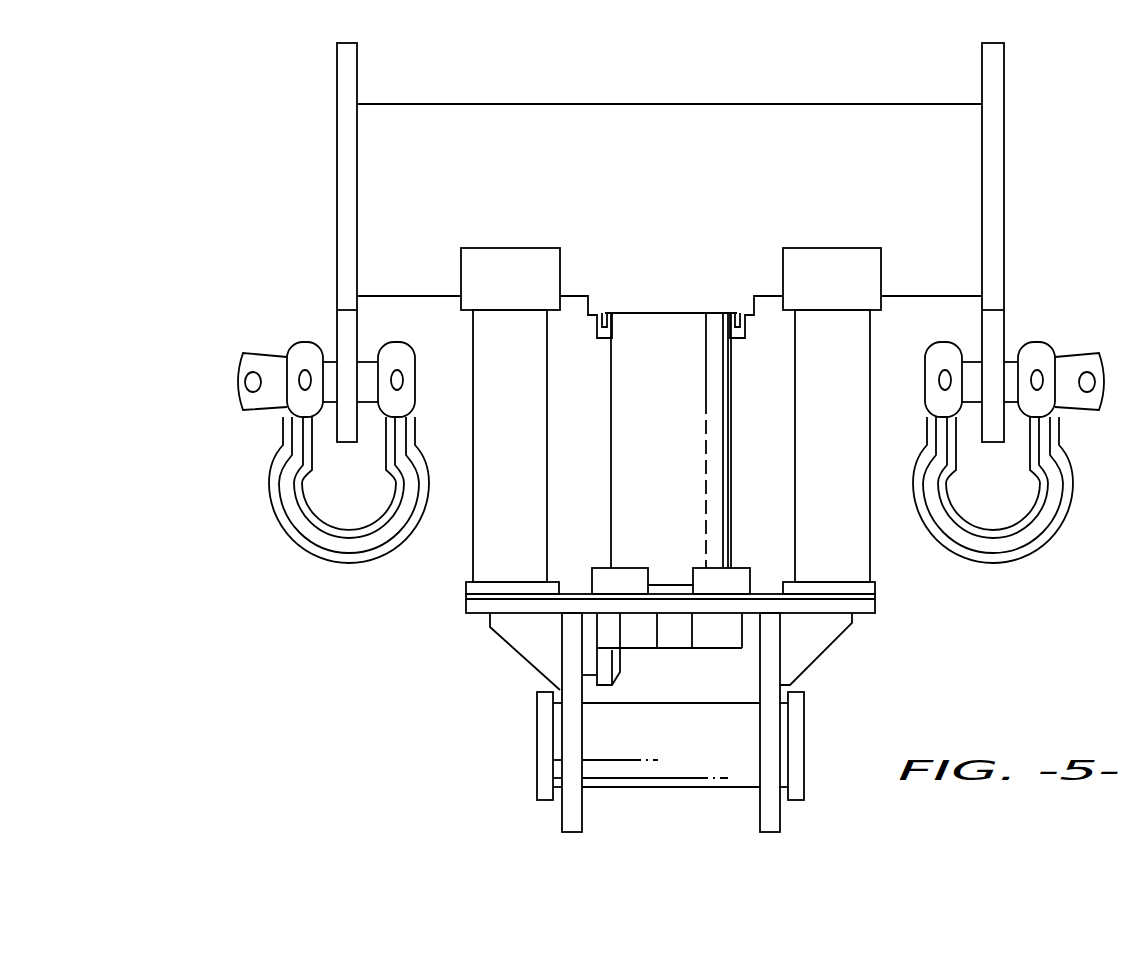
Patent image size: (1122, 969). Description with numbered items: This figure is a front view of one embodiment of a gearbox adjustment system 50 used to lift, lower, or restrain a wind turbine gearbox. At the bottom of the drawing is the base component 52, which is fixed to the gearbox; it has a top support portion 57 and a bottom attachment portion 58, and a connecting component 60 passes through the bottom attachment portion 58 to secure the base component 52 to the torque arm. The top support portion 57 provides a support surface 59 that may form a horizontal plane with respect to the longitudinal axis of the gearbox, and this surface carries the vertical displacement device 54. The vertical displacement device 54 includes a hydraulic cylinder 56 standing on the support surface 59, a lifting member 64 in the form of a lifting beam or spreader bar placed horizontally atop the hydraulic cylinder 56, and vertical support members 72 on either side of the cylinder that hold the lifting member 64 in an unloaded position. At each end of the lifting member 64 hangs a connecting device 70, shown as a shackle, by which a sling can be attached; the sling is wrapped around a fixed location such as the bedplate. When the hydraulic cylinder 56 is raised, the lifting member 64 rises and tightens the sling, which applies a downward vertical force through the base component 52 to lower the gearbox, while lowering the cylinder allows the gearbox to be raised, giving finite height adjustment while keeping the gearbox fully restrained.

The gearbox adjustment system 50 is at (596, 242).
The base component 52 is at (698, 723).
The vertical displacement device 54 is at (645, 528).
The hydraulic cylinder 56 is at (686, 483).
The top support portion 57 is at (464, 602).
The bottom attachment portion 58 is at (556, 688).
The support surface 59 is at (573, 594).
The connecting component 60 is at (686, 762).
The lifting member 64 is at (712, 122).
The connecting device 70 is at (290, 523).
The vertical support member 72 is at (549, 441).